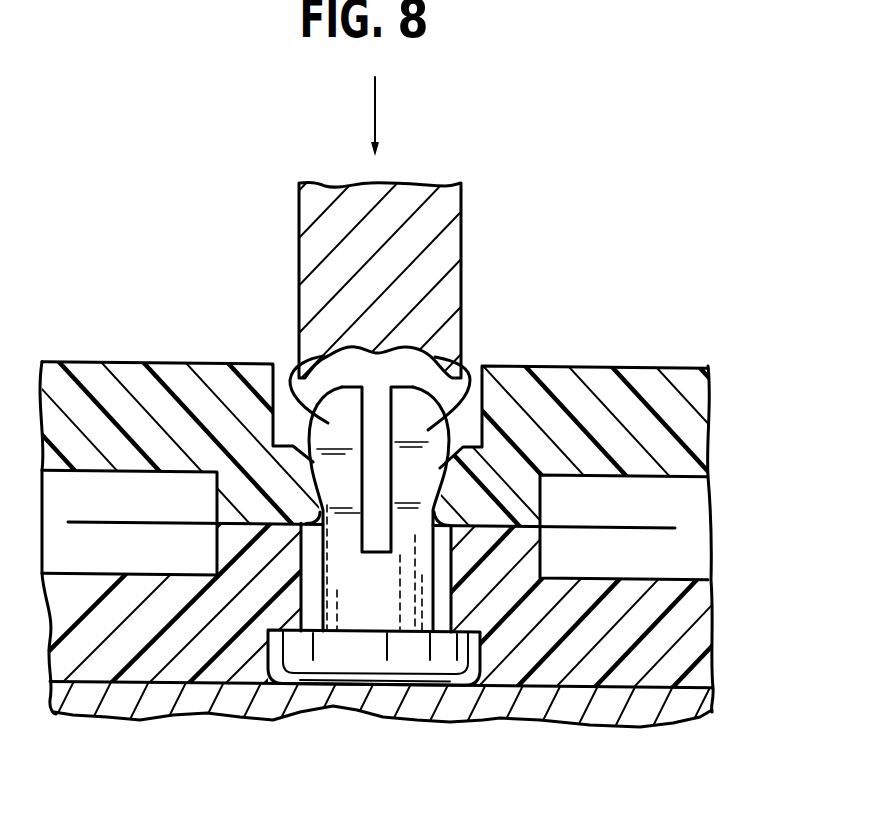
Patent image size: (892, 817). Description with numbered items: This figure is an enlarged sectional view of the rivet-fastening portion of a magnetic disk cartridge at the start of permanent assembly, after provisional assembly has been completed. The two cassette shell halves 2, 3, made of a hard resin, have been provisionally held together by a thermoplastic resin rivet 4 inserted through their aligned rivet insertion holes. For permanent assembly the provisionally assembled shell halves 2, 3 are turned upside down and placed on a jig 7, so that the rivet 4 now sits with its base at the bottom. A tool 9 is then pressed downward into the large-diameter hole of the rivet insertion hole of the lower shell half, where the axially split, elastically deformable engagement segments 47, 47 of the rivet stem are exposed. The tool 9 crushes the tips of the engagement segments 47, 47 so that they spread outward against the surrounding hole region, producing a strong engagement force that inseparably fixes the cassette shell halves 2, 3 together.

The cassette shell half 2 is at (693, 425).
The cassette shell half 3 is at (688, 612).
The rivet 4 is at (399, 672).
The jig 7 is at (700, 697).
The tool 9 is at (450, 213).
The engagement segments 47 is at (288, 368).